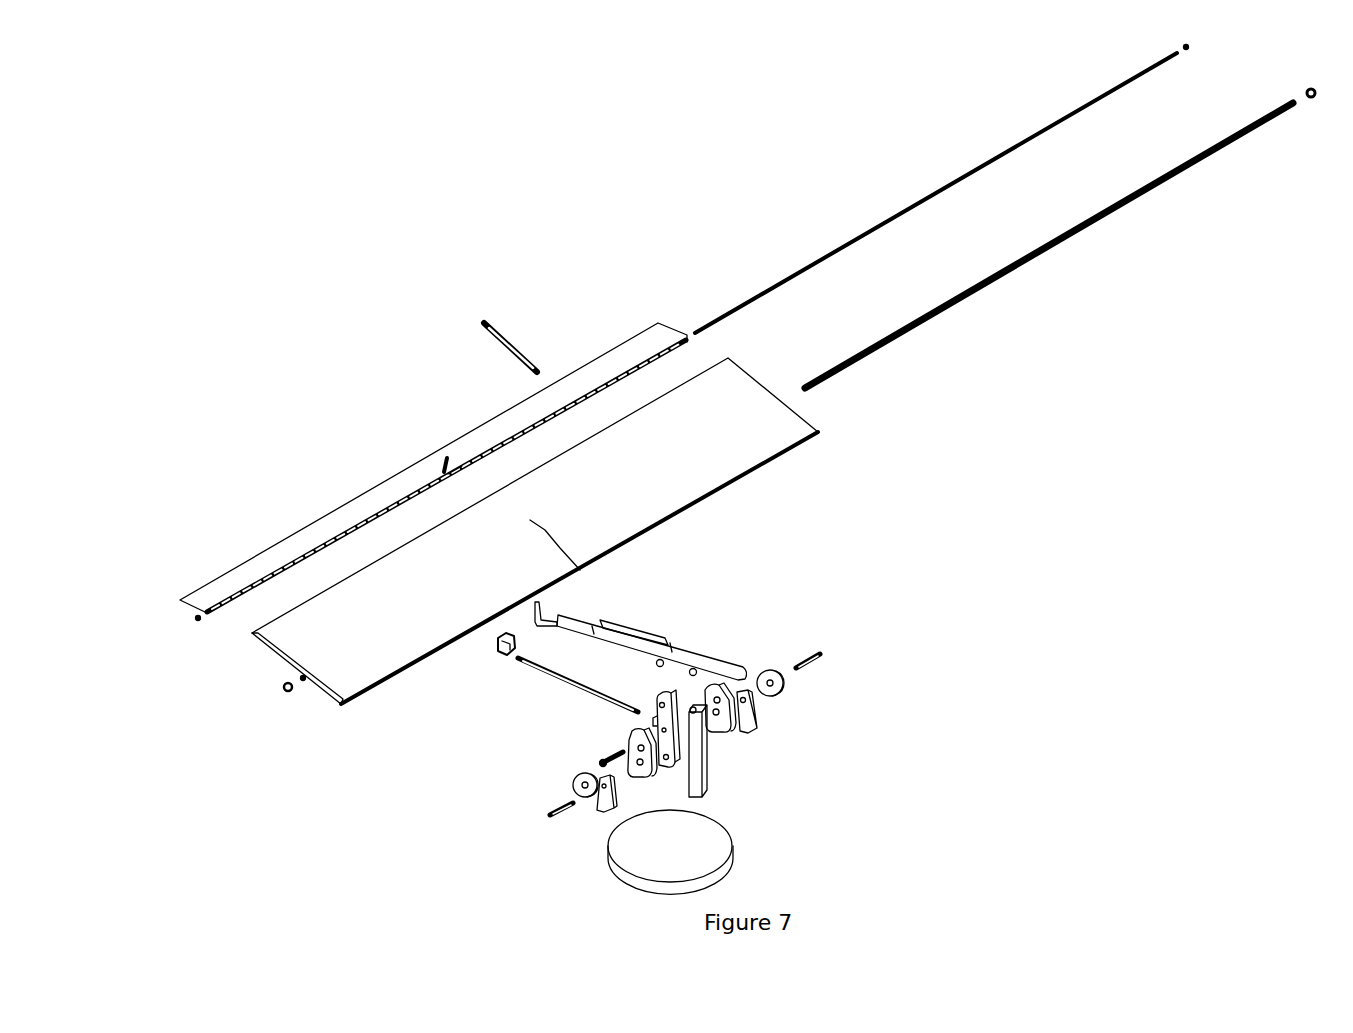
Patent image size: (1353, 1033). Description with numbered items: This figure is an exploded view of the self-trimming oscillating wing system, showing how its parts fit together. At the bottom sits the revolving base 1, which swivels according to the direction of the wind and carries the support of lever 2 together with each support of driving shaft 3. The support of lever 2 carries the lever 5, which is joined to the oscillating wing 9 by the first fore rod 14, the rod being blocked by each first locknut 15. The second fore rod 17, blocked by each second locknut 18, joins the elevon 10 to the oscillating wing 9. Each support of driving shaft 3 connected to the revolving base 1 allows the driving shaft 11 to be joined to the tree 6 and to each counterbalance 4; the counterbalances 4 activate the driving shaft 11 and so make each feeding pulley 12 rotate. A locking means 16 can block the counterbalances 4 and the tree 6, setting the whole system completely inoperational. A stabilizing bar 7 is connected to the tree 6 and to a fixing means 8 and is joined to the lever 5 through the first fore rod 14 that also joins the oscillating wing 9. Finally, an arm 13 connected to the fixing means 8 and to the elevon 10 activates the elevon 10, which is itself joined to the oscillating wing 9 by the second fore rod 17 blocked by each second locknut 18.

The revolving base 1 is at (642, 840).
The support of lever 2 is at (697, 780).
The support of driving shaft 3 is at (752, 708).
The counterbalance 4 is at (723, 727).
The lever 5 is at (670, 640).
The tree 6 is at (667, 762).
The stabilizing bar 7 is at (550, 677).
The fixing means 8 is at (497, 648).
The oscillating wing 9 is at (362, 660).
The elevon 10 is at (417, 477).
The driving shaft 11 is at (823, 651).
The feeding pulley 12 is at (780, 685).
The arm activating the elevon 13 is at (490, 322).
The first fore rod 14 is at (1095, 222).
The first locknut 15 is at (285, 690).
The locking means 16 is at (620, 752).
The second fore rod 17 is at (918, 203).
The second locknut 18 is at (1188, 48).